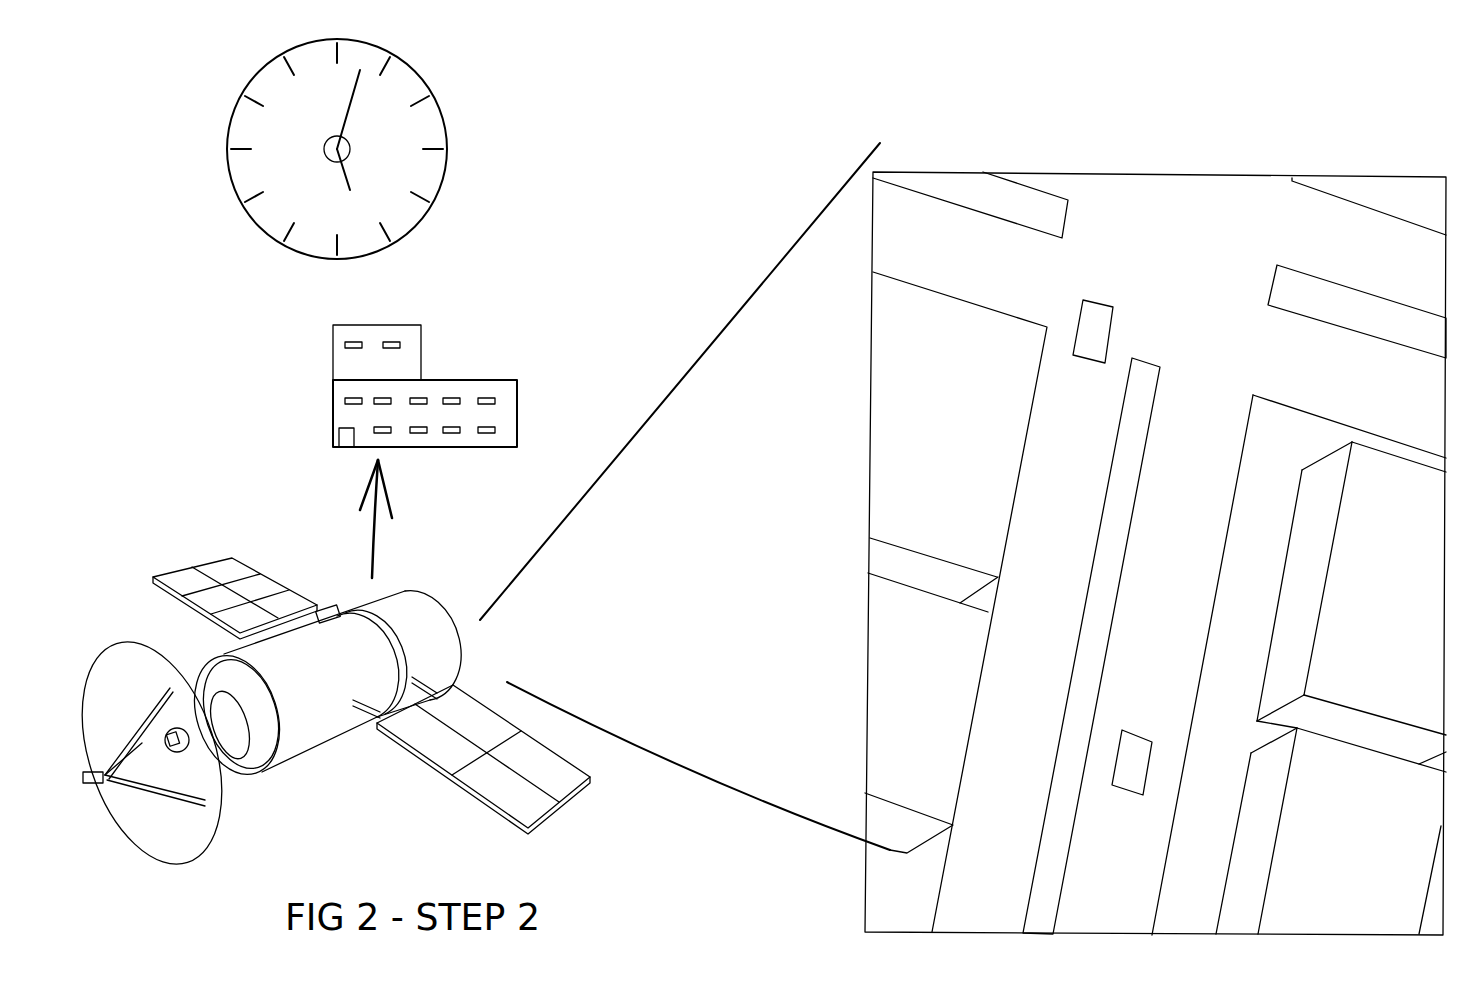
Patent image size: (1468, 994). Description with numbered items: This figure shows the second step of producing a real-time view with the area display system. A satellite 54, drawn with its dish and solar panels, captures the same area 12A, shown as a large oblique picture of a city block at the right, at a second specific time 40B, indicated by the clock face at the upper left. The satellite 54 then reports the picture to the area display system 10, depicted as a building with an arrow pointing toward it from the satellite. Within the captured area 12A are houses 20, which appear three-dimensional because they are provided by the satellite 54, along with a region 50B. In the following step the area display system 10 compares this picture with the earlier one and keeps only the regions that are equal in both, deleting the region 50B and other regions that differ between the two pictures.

The area display system 10 is at (343, 427).
The area 12A is at (1140, 148).
The houses 20 is at (935, 438).
The second specific time 40B is at (303, 230).
The region 50B is at (1095, 338).
The satellite 54 is at (333, 607).